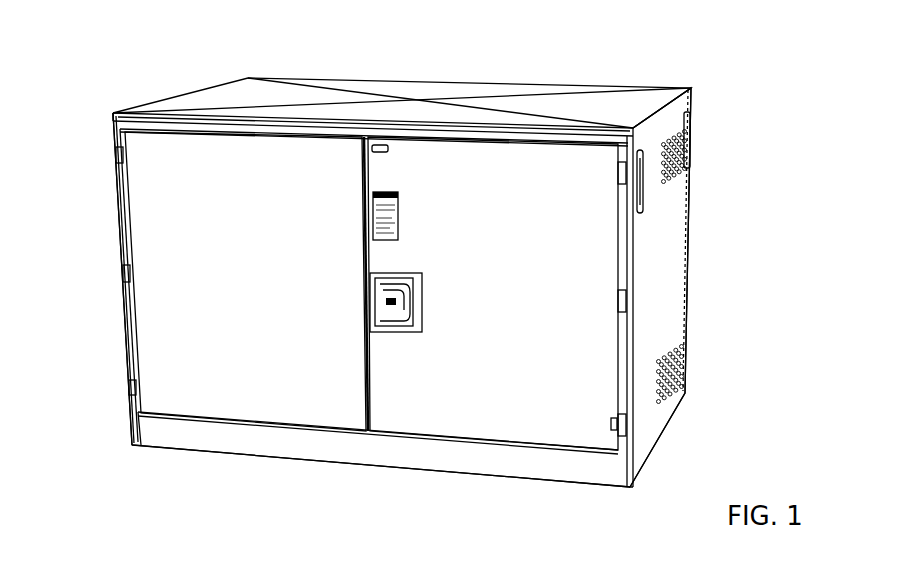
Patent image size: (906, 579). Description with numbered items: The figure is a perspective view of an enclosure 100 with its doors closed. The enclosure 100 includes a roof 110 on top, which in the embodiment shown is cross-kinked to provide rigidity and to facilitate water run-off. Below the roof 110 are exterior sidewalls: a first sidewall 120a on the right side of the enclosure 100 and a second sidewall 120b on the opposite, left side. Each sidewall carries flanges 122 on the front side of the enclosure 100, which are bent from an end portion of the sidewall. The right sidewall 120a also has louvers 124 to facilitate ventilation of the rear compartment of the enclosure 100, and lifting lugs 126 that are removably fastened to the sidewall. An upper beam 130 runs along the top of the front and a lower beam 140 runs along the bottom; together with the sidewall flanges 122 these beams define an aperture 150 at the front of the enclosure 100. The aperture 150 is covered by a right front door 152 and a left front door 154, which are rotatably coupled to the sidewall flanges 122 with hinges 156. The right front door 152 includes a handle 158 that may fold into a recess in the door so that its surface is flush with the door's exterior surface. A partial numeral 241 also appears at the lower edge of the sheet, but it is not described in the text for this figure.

The enclosure 100 is at (498, 55).
The roof 110 is at (440, 118).
The first sidewall 120a is at (675, 278).
The second sidewall 120b is at (82, 118).
The flanges 122 is at (128, 340).
The louvers 124 is at (672, 360).
The lifting lugs 126 is at (643, 198).
The upper beam 130 is at (222, 128).
The lower beam 140 is at (253, 438).
The aperture 150 is at (403, 402).
The right front door 152 is at (450, 415).
The left front door 154 is at (190, 380).
The hinges 156 is at (613, 424).
The handle 158 is at (420, 305).
The component (partial, adjacent figure) 241 is at (244, 577).